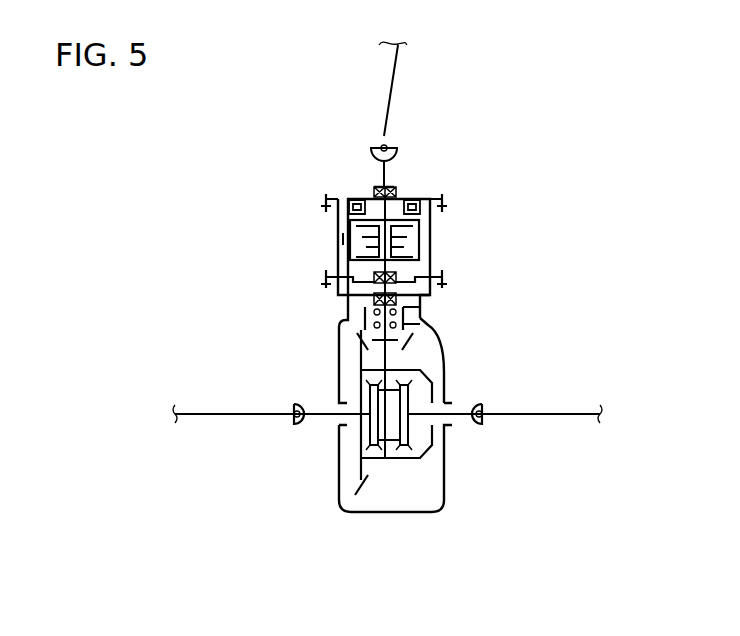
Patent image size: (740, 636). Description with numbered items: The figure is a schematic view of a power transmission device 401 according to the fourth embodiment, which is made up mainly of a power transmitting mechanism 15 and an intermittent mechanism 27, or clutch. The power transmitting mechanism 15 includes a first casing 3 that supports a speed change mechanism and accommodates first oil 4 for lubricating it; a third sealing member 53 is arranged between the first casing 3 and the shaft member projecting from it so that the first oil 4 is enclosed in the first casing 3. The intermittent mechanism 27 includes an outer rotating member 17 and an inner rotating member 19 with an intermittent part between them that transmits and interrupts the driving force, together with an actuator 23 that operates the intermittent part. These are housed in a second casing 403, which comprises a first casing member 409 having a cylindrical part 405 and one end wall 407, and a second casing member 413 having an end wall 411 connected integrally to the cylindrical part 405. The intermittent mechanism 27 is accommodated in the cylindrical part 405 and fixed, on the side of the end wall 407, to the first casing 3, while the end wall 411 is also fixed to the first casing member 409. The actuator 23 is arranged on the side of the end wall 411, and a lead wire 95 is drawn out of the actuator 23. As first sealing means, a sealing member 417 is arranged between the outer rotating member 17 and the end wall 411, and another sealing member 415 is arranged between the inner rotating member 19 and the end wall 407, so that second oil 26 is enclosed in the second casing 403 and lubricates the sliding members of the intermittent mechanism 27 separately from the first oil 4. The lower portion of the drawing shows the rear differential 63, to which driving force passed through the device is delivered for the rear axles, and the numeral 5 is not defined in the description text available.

The power transmission device 401 is at (500, 112).
The actuator 23 is at (352, 192).
The second casing member 413 is at (332, 192).
The sealing member 417 is at (376, 187).
The lead wire 95 is at (411, 188).
The end wall 411 is at (432, 197).
The outer rotating member 17 is at (338, 232).
The second casing 403 is at (432, 236).
The intermittent mechanism 27 is at (540, 228).
The cylindrical part 405 is at (343, 234).
The second oil 26 is at (350, 240).
The inner rotating member 19 is at (358, 262).
The sealing member 415 is at (420, 265).
The end wall 407 is at (353, 282).
The third sealing member 53 is at (374, 300).
The first casing member 409 is at (420, 297).
The first casing 3 is at (410, 320).
The first oil 4 is at (341, 372).
The power transmitting mechanism 15 is at (323, 373).
The differential device 5 is at (447, 492).
The rear differential 63 is at (397, 473).